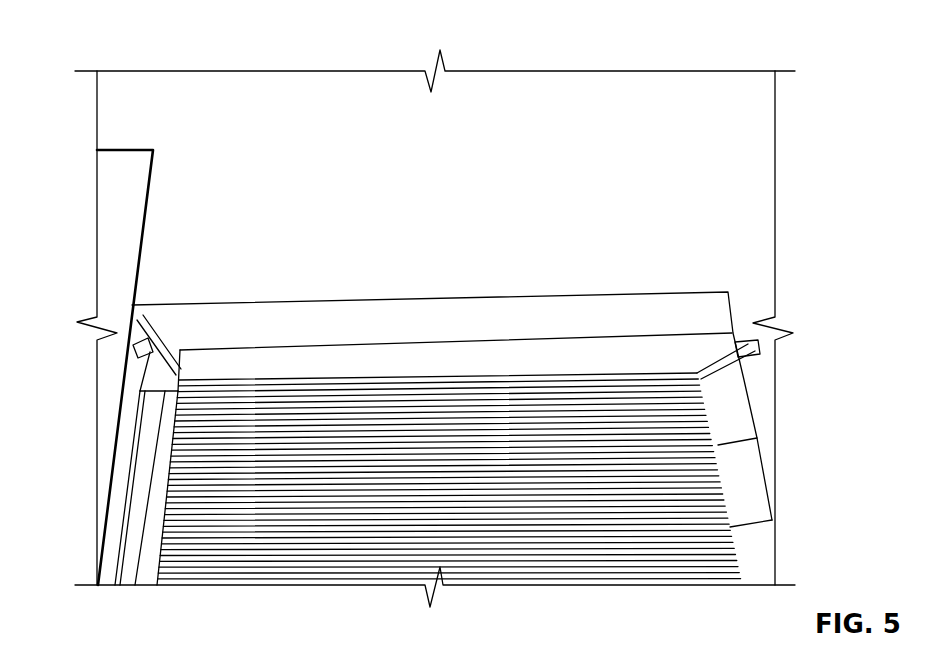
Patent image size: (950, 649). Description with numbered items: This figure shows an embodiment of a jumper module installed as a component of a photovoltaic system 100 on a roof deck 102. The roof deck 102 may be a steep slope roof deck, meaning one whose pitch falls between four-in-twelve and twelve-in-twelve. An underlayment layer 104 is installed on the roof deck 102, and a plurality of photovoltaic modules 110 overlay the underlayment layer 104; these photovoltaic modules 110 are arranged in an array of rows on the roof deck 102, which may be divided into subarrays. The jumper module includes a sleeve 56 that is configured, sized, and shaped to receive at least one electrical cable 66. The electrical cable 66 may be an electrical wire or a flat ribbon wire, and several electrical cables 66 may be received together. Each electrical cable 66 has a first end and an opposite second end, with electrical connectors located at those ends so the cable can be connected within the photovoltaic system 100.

The sleeve 56 is at (412, 302).
The electrical cable 66 is at (722, 367).
The photovoltaic system 100 is at (115, 362).
The roof deck 102 is at (197, 167).
The underlayment layer 104 is at (670, 158).
The photovoltaic module 110 is at (342, 515).